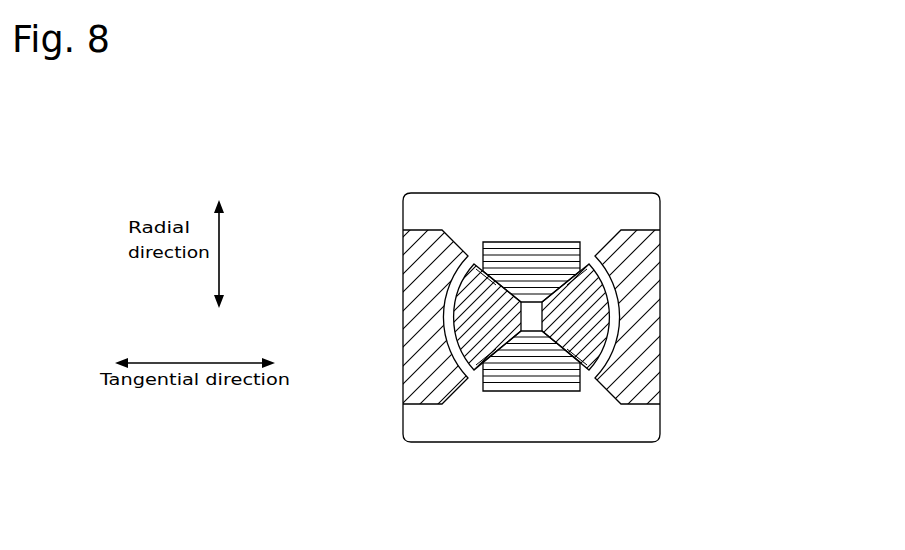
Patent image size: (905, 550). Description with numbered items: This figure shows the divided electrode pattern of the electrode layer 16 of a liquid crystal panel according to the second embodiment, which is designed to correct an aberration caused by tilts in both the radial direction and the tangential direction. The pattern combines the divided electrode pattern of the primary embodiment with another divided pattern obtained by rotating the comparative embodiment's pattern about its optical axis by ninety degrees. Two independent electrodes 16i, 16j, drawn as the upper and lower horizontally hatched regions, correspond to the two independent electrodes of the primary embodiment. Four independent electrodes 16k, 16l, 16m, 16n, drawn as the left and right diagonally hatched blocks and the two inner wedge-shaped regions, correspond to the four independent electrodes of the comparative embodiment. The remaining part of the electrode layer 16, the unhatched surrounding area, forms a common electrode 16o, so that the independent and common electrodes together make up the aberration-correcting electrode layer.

The electrode layer 16 is at (725, 221).
The independent electrode 16i is at (542, 245).
The independent electrode 16j is at (527, 391).
The independent electrode 16k is at (477, 245).
The independent electrode 16l is at (600, 245).
The independent electrode 16m is at (405, 287).
The independent electrode 16n is at (660, 302).
The common electrode 16o is at (608, 432).